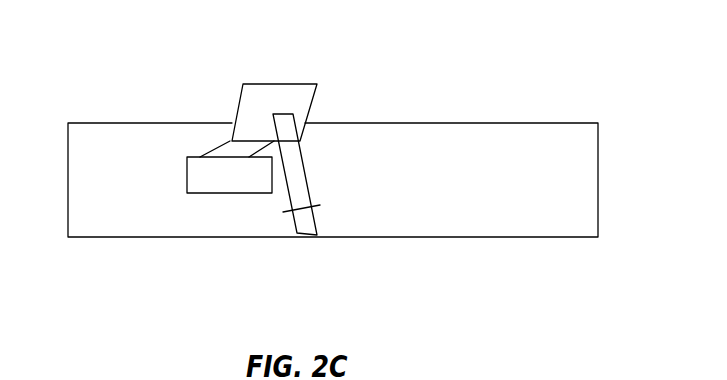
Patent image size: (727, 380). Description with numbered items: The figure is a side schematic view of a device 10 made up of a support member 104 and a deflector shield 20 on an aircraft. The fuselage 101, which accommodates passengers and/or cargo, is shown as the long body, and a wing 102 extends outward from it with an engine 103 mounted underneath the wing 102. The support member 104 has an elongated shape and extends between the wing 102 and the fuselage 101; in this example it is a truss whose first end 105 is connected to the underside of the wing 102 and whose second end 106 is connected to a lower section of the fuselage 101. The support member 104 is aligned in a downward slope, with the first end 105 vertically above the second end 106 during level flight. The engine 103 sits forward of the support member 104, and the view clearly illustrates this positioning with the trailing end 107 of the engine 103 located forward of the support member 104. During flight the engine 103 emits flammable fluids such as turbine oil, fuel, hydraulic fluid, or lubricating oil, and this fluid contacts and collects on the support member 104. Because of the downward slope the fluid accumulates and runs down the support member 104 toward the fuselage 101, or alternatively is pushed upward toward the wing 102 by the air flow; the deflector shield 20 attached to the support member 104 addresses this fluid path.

The device 10 is at (230, 205).
The deflector shield 20 is at (312, 206).
The fuselage 101 is at (513, 90).
The wing 102 is at (253, 93).
The engine 103 is at (198, 170).
The support member 104 is at (328, 218).
The first end 105 is at (287, 122).
The second end 106 is at (305, 228).
The trailing end 107 is at (277, 188).